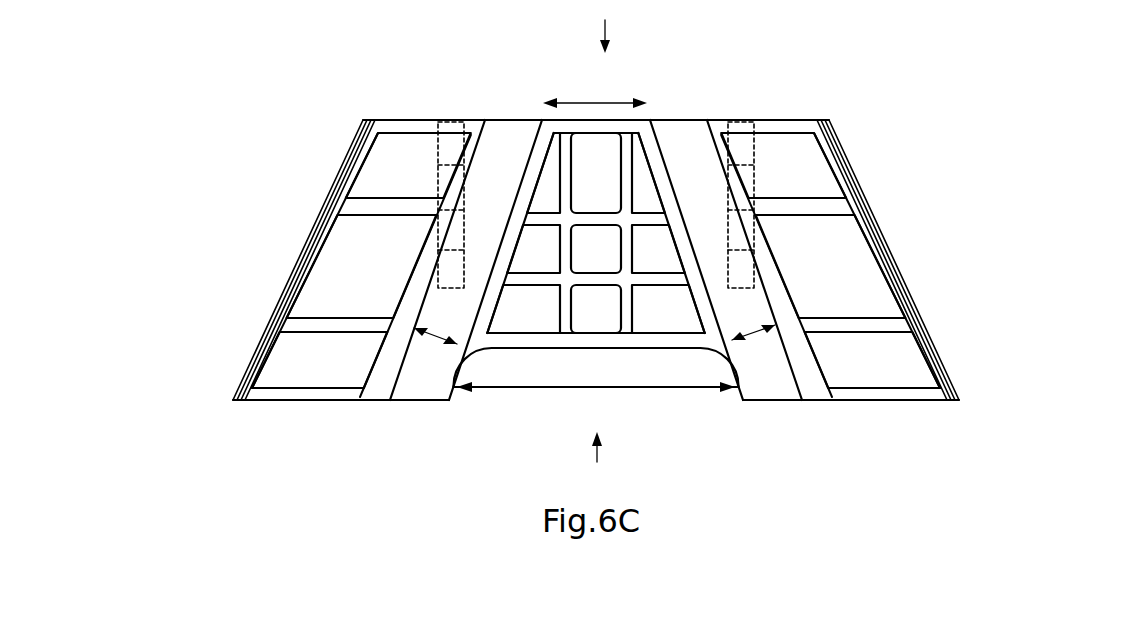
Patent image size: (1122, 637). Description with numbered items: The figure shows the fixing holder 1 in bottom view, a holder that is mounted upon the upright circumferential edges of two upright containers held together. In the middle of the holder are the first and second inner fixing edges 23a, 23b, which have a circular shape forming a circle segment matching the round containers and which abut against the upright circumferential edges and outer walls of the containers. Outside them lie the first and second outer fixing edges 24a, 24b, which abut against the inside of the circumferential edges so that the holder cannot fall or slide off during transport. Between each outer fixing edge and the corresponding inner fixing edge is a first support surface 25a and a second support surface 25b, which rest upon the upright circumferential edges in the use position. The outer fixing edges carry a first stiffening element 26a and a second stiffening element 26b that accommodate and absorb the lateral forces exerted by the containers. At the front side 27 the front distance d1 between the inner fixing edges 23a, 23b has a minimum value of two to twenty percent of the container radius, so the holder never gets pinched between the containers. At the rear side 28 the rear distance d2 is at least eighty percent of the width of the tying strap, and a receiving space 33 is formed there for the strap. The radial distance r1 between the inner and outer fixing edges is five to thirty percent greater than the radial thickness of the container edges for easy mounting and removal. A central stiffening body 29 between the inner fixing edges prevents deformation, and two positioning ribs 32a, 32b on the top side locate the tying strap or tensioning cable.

The fixing holder 1 is at (966, 158).
The first inner fixing edge 23a is at (537, 143).
The second inner fixing edge 23b is at (656, 143).
The first outer fixing edge 24a is at (480, 143).
The second outer fixing edge 24b is at (717, 140).
The first support surface 25a is at (414, 384).
The second support surface 25b is at (783, 377).
The first stiffening element 26a is at (363, 245).
The second stiffening element 26b is at (826, 268).
The front side 27 is at (613, 26).
The rear side 28 is at (597, 464).
The central stiffening body 29 is at (560, 287).
The positioning rib 32a is at (450, 157).
The positioning rib 32b is at (743, 160).
The receiving space 33 is at (653, 367).
The front distance d1 is at (595, 86).
The rear distance d2 is at (596, 400).
The radial distance r1 is at (592, 346).